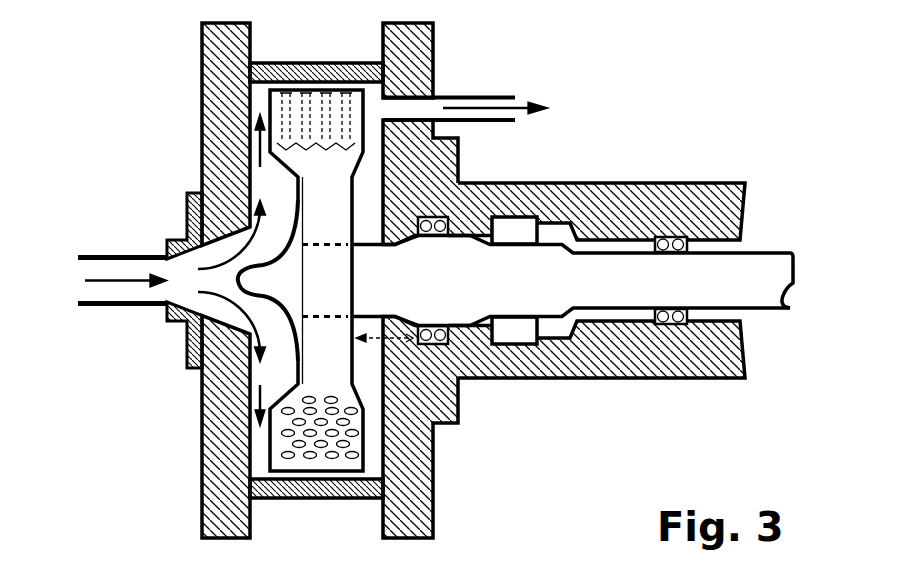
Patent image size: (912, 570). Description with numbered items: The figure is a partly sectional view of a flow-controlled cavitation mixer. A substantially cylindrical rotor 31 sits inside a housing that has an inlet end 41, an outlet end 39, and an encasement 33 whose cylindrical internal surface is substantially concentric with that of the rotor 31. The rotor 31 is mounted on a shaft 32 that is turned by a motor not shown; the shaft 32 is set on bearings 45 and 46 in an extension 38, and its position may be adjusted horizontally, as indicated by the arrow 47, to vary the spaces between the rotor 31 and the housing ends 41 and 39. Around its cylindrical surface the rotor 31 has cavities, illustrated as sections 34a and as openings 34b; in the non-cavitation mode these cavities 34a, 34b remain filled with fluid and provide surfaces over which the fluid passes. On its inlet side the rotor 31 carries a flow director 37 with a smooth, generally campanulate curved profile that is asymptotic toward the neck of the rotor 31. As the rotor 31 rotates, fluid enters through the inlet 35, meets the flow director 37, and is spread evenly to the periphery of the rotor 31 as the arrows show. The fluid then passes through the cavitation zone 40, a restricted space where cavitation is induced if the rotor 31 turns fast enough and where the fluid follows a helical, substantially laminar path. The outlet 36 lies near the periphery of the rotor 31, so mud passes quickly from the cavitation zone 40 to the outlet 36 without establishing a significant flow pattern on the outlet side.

The rotor 31 is at (342, 221).
The shaft 32 is at (524, 295).
The encasement 33 is at (350, 72).
The cavity sections 34a is at (290, 106).
The cavity openings 34b is at (284, 437).
The inlet 35 is at (117, 256).
The outlet 36 is at (485, 97).
The flow director 37 is at (299, 295).
The extension 38 is at (625, 183).
The outlet end 39 is at (413, 458).
The cavitation zone 40 is at (305, 83).
The inlet end 41 is at (222, 493).
The bearing 45 is at (432, 218).
The bearing 46 is at (672, 238).
The arrow 47 is at (407, 343).